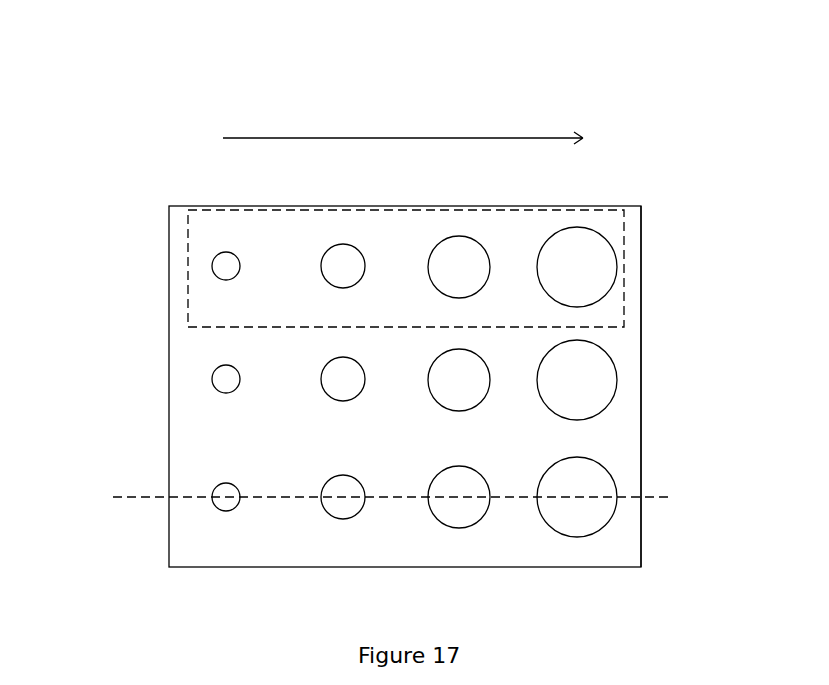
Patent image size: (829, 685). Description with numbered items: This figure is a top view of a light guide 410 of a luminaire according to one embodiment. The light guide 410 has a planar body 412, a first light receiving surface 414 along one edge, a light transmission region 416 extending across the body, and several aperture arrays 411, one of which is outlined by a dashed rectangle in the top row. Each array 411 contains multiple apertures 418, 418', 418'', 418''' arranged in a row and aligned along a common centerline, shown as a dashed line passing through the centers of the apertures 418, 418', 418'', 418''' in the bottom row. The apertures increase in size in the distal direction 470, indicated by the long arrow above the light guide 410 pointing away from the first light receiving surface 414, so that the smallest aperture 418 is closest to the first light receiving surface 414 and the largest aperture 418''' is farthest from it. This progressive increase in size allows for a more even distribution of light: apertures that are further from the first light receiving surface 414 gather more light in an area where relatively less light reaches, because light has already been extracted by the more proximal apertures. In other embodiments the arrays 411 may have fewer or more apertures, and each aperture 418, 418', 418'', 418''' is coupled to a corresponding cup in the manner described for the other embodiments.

The light guide 410 is at (188, 178).
The distal direction 470 is at (412, 138).
The aperture array 411 is at (188, 269).
The planar body 412 is at (657, 376).
The first light receiving surface 414 is at (169, 382).
The light transmission region 416 is at (370, 527).
The aperture 418 is at (369, 550).
The aperture 418' is at (372, 546).
The aperture 418'' is at (484, 541).
The aperture 418''' is at (603, 536).